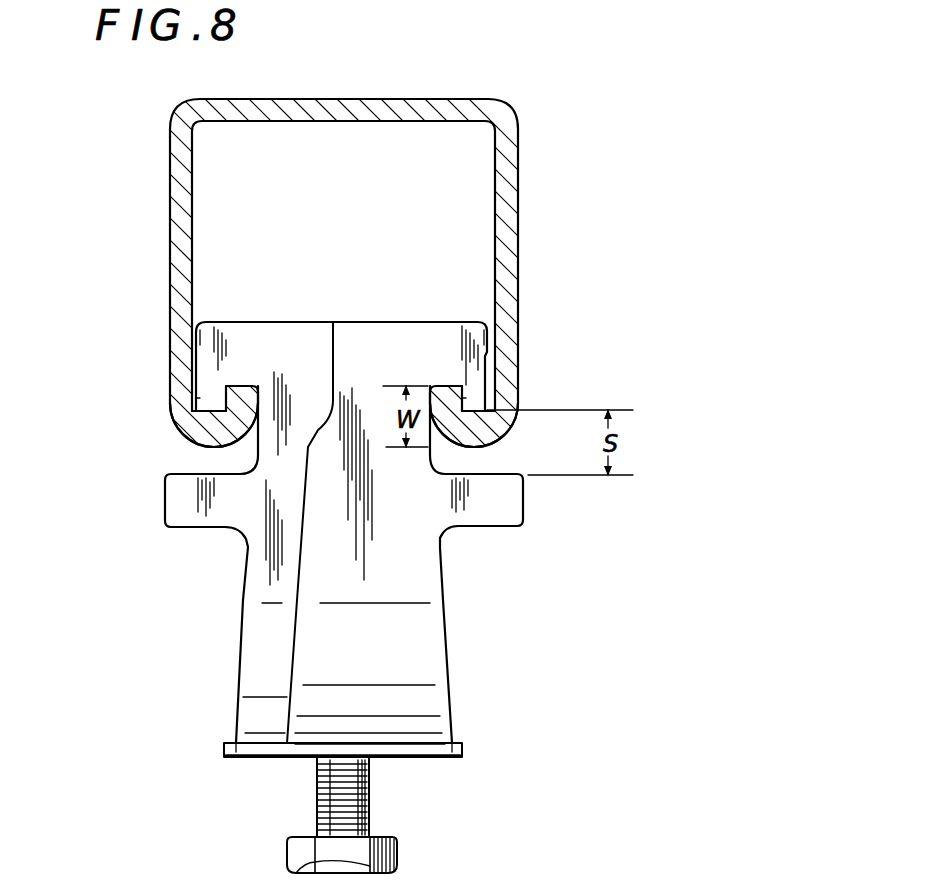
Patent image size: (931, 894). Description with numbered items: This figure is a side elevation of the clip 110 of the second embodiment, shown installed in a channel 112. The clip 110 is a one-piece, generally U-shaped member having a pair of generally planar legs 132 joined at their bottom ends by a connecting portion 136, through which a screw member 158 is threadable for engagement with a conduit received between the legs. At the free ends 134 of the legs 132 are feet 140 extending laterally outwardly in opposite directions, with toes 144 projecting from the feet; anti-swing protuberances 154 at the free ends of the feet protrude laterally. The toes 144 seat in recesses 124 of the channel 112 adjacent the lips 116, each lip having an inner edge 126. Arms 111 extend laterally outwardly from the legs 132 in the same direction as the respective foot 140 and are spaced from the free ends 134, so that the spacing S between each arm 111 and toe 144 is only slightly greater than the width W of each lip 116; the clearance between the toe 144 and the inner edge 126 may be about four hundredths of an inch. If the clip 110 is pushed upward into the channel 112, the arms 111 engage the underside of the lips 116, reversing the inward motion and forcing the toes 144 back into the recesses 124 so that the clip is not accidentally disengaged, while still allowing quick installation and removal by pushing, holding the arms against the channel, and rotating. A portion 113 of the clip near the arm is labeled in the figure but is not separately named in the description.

The clip 110 is at (215, 557).
The arms 111 is at (181, 502).
The channel 112 is at (378, 100).
The shoulder 113 is at (208, 462).
The lips of the channel 116 is at (210, 406).
The recesses 124 is at (213, 420).
The inner edge of channel lip 126 is at (243, 384).
The legs 132 is at (262, 640).
The free ends of legs 134 is at (308, 312).
The connecting portion 136 is at (413, 760).
The foot 140 is at (228, 330).
The toes 144 is at (217, 390).
The protuberances 154 is at (210, 340).
The screw member 158 is at (400, 850).